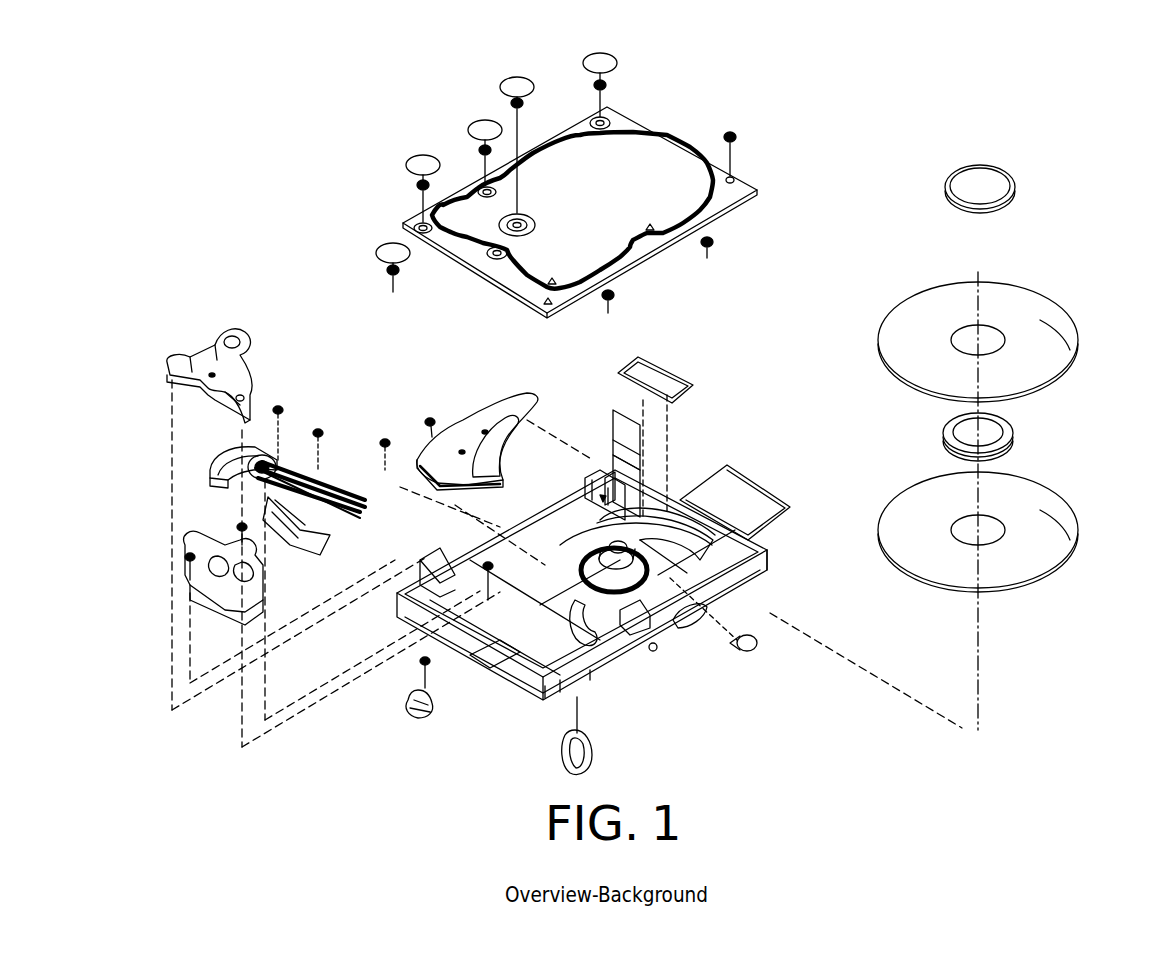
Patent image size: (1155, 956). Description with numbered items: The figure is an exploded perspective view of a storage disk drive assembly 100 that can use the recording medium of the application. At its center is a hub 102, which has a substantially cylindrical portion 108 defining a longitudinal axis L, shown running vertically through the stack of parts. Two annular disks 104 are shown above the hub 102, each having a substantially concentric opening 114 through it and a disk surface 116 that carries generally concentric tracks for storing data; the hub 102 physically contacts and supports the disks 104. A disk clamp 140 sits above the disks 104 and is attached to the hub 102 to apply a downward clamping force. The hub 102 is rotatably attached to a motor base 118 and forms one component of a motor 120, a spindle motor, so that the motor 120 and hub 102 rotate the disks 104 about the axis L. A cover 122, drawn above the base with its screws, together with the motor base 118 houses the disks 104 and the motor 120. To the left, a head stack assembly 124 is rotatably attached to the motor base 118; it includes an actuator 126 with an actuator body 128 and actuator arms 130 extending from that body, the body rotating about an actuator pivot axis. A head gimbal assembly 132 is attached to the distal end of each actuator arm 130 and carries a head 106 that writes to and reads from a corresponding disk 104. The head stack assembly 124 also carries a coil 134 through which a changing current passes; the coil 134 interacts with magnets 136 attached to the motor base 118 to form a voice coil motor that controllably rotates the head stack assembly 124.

The storage disk drive assembly 100 is at (205, 95).
The hub 102 is at (760, 605).
The disk 104 is at (878, 338).
The head 106 is at (370, 500).
The substantially cylindrical portion 108 is at (640, 615).
The substantially concentric opening 114 is at (990, 328).
The disk surface 116 is at (1060, 335).
The motor base 118 is at (779, 610).
The motor 120 is at (597, 480).
The cover 122 is at (740, 210).
The head stack assembly 124 is at (354, 532).
The actuator 126 is at (265, 407).
The actuator body 128 is at (277, 463).
The actuator arm 130 is at (297, 453).
The head gimbal assembly 132 is at (350, 477).
The coil 134 is at (206, 441).
The magnet 136 is at (215, 548).
The disk clamp 140 is at (945, 210).
The longitudinal axis L is at (982, 665).